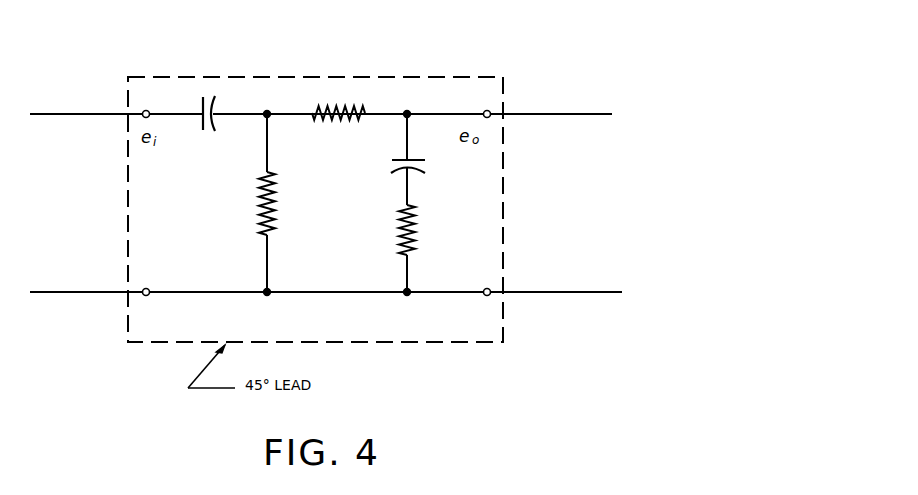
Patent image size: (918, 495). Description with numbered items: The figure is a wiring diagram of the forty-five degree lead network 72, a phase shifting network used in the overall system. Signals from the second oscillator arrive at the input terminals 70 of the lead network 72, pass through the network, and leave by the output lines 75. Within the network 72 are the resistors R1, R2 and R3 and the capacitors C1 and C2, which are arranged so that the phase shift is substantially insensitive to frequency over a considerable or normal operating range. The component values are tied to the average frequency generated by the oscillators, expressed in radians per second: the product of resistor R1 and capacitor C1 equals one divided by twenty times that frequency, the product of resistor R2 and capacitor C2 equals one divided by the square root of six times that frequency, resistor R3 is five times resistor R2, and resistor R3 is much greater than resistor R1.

The input terminals 70 is at (66, 292).
The forty-five degree lead network 72 is at (317, 77).
The output lines 75 is at (572, 292).
The capacitor C1 is at (210, 132).
The capacitor C2 is at (390, 168).
The resistor R1 is at (258, 206).
The resistor R2 is at (398, 234).
The resistor R3 is at (335, 106).